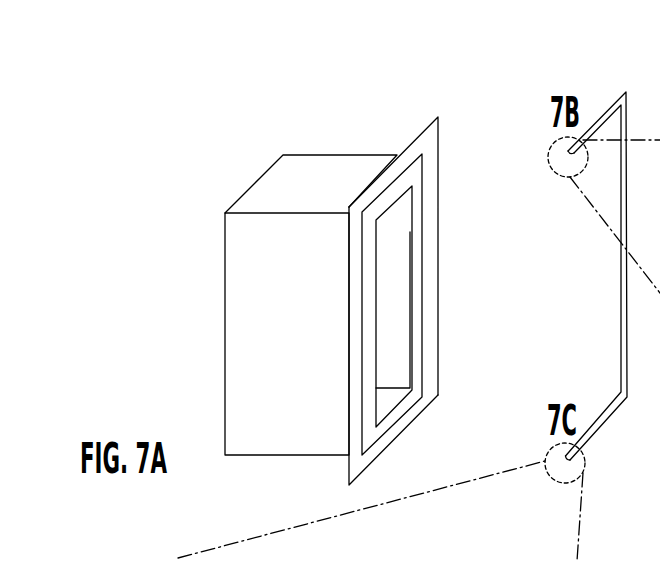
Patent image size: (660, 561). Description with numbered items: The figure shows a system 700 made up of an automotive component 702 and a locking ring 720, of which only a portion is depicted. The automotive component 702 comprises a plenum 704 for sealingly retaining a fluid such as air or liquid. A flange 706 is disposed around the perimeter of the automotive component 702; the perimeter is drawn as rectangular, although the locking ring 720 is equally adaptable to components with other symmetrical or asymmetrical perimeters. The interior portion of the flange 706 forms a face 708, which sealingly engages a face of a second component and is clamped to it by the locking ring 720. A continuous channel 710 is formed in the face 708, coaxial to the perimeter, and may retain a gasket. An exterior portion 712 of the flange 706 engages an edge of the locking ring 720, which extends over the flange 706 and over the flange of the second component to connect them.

The system 700 is at (166, 150).
The automotive component 702 is at (221, 273).
The plenum 704 is at (397, 312).
The flange 706 is at (443, 114).
The face 708 is at (430, 146).
The channel 710 is at (422, 278).
The exterior portion 712 is at (348, 470).
The locking ring 720 is at (614, 333).